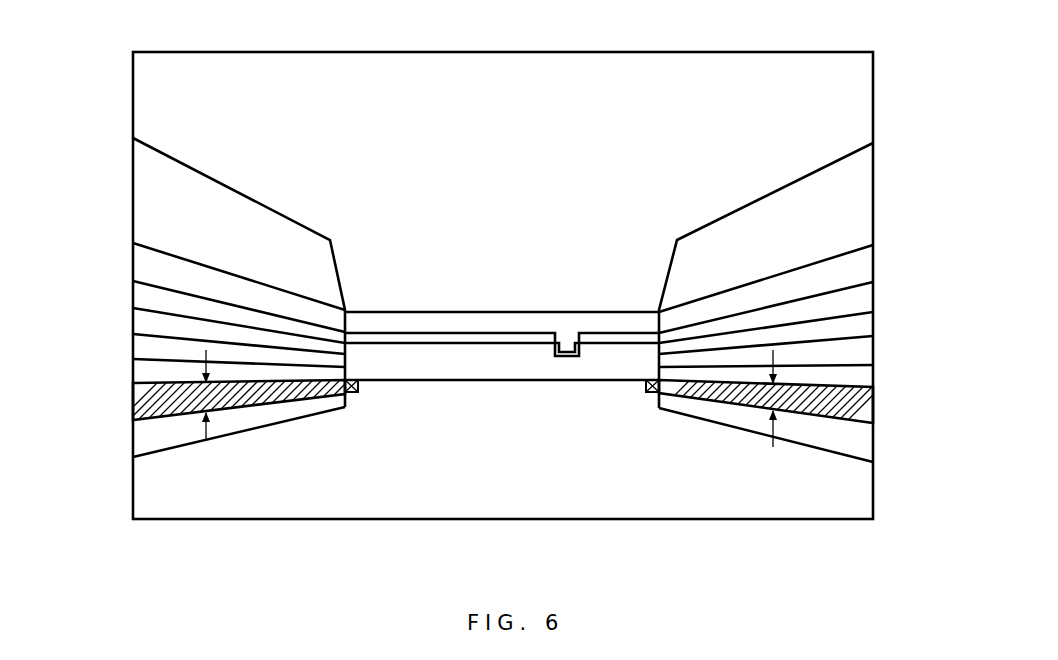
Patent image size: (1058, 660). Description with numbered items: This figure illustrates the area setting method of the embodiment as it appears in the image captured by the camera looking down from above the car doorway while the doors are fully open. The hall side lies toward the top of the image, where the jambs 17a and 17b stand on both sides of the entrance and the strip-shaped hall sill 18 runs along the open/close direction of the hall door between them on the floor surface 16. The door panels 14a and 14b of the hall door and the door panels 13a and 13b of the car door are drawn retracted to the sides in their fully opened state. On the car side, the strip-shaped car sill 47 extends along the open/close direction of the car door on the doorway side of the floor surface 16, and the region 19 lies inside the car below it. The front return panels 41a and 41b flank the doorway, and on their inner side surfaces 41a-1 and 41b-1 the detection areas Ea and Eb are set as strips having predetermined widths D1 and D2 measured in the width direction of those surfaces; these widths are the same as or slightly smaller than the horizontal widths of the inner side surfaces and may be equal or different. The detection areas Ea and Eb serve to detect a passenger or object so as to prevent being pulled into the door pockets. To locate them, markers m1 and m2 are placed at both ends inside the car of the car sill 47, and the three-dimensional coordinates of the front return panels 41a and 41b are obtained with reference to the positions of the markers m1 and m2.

The floor surface 16 is at (502, 330).
The jamb 17a is at (252, 217).
The jamb 17b is at (790, 197).
The door panel 14a is at (140, 262).
The door panel 14b is at (857, 266).
The door panel 13a is at (124, 305).
The door panel 13b is at (882, 308).
The hall sill 18 is at (460, 320).
The car sill 47 is at (465, 383).
The substrate 19 is at (600, 492).
The front return panel 41a is at (124, 388).
The front return panel 41b is at (882, 390).
The inner side surface 41a-1 is at (165, 432).
The inner side surface 41b-1 is at (813, 435).
The marker m1 is at (358, 394).
The marker m2 is at (652, 394).
The detection area Ea is at (274, 402).
The detection area Eb is at (697, 398).
The width D1 is at (208, 436).
The width D2 is at (771, 432).